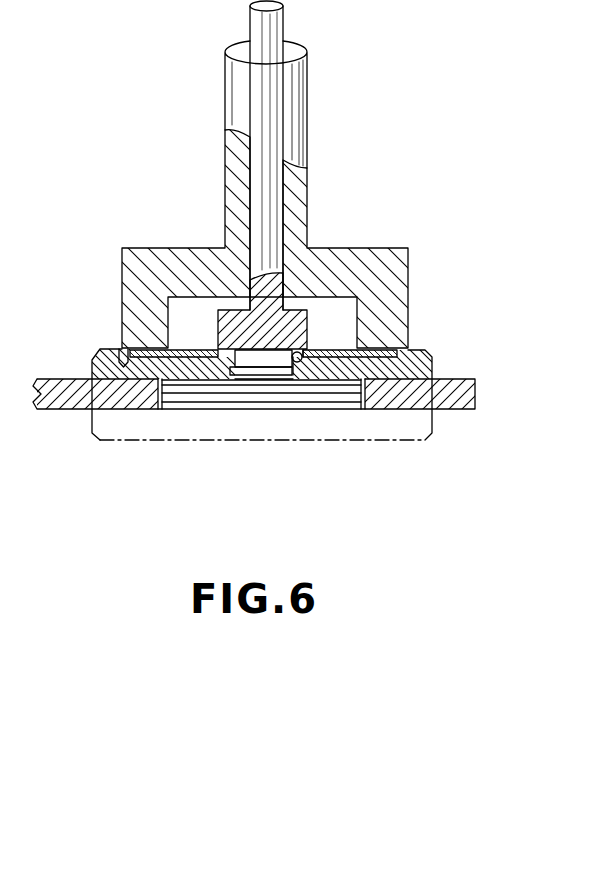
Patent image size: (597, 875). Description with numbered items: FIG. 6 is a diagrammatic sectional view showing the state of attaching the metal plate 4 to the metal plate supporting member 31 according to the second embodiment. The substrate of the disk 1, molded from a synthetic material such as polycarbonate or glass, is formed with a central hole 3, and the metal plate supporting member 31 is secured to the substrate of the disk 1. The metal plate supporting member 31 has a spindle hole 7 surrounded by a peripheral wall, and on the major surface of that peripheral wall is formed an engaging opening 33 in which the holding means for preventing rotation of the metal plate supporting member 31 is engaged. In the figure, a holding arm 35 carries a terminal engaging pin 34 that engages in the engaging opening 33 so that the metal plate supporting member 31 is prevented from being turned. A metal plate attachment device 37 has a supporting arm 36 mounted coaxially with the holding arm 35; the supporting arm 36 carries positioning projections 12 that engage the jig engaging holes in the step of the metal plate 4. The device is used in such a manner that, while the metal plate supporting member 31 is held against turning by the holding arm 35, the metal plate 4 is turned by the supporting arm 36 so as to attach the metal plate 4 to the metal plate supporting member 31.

The substrate of the disk 1 is at (468, 384).
The central hole 3 is at (353, 384).
The metal plate 4 is at (345, 351).
The spindle hole 7 is at (309, 330).
The positioning projections 12 is at (114, 360).
The metal plate supporting member 31 is at (102, 365).
The engaging opening 33 is at (297, 382).
The terminal engaging pin 34 is at (347, 340).
The holding arm 35 is at (268, 222).
The supporting arm 36 is at (170, 258).
The metal plate attachment device 37 is at (316, 99).